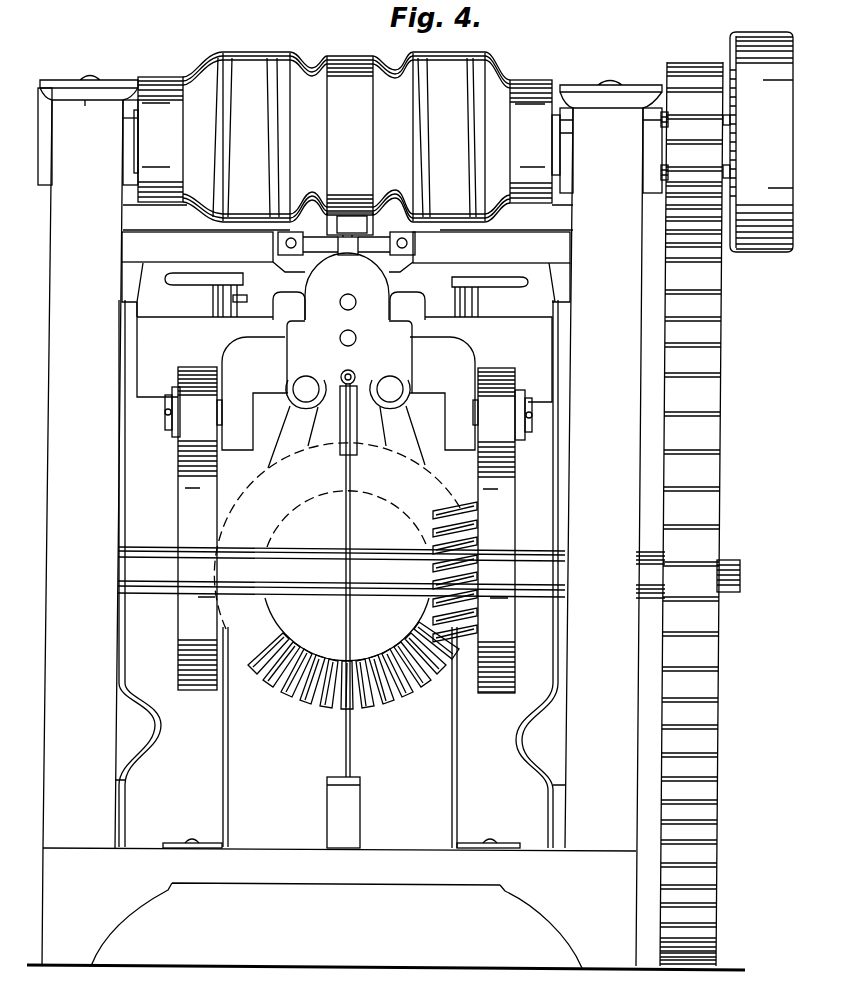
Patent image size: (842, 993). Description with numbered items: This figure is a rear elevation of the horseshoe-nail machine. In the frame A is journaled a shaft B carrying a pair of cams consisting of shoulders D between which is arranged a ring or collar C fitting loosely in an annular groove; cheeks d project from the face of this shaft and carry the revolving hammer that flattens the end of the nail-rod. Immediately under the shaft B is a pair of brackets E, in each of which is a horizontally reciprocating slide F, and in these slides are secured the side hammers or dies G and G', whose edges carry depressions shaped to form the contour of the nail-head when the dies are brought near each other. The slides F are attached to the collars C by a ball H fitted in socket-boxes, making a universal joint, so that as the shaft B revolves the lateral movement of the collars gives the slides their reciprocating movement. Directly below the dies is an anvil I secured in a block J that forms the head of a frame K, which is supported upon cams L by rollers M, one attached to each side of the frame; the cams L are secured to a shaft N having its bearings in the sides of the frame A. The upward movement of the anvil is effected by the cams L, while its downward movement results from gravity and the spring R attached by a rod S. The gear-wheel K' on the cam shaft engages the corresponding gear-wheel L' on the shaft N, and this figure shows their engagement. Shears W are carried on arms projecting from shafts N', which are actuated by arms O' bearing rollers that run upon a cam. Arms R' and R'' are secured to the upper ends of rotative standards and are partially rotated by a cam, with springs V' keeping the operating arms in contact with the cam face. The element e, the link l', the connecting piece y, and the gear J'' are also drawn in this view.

The frame A is at (386, 523).
The shaft B is at (665, 112).
The ring or collar C is at (347, 137).
The shoulders D is at (348, 137).
The brackets E is at (346, 274).
The slide F is at (343, 264).
The side hammer or die G is at (346, 244).
The side hammer or die G' is at (346, 246).
The ball H is at (240, 230).
The anvil I is at (348, 246).
The block J is at (349, 323).
The gear wheel J'' is at (726, 499).
The frame K is at (344, 376).
The gear-wheel K' is at (338, 576).
The cams L is at (346, 530).
The gear-wheel L' is at (454, 567).
The rollers M is at (348, 413).
The shaft N is at (429, 572).
The shafts N' is at (348, 392).
The arms O' is at (346, 437).
The spring R is at (343, 812).
The arm R' is at (490, 285).
The arm R'' is at (204, 279).
The rod S is at (349, 580).
The springs V' is at (341, 737).
The shears W is at (349, 306).
The cheeks d is at (349, 224).
The block e is at (352, 226).
The link l' is at (342, 301).
The connecting rod y is at (340, 574).